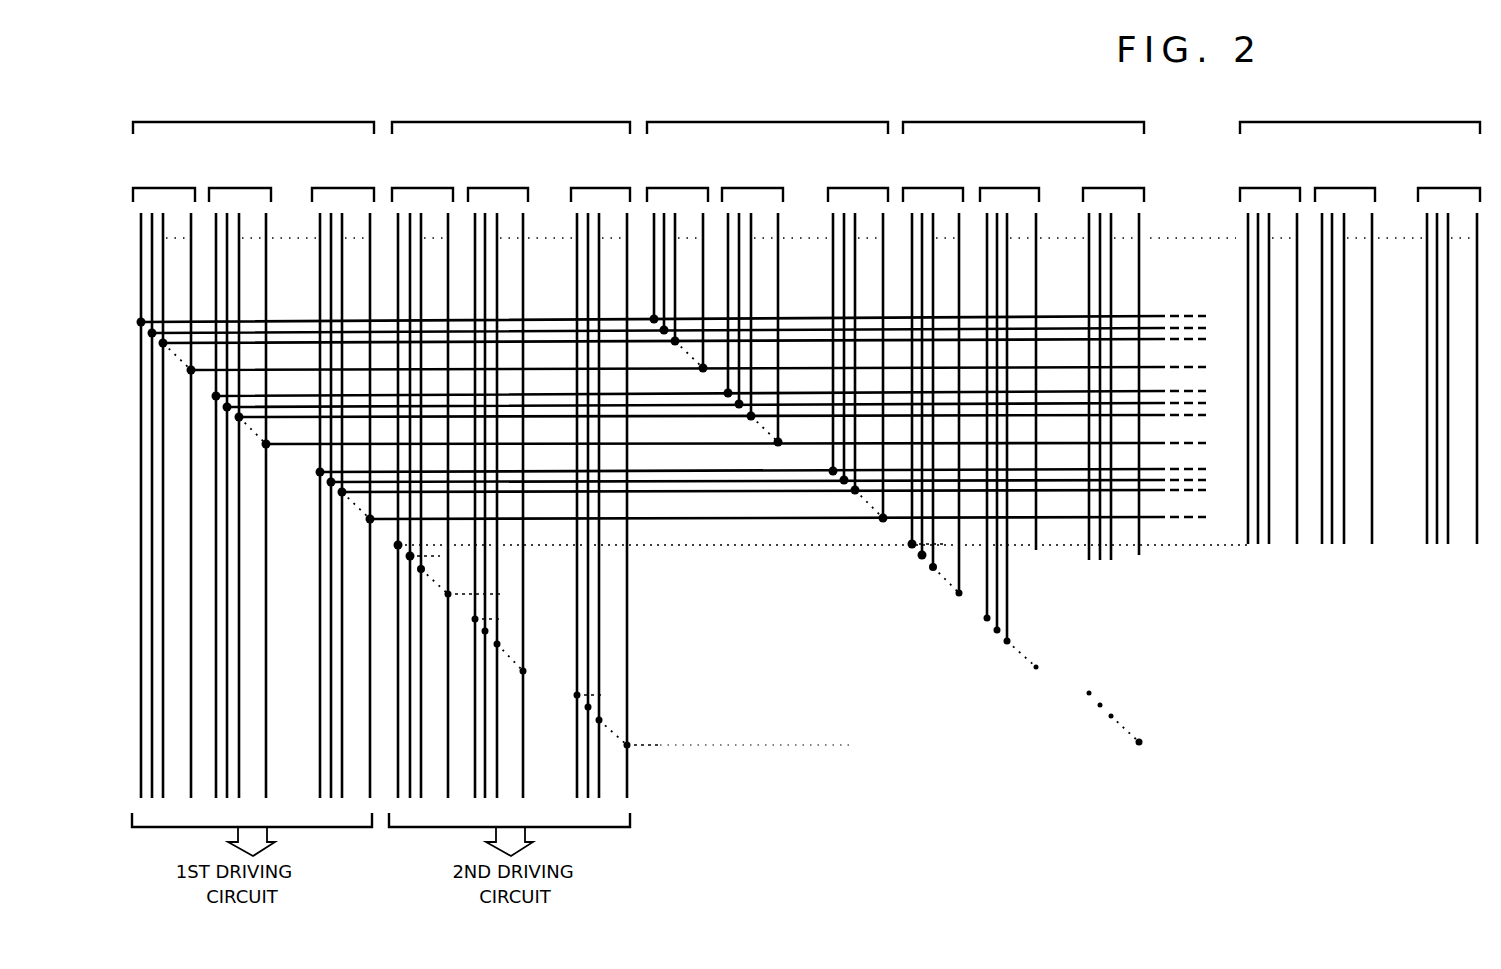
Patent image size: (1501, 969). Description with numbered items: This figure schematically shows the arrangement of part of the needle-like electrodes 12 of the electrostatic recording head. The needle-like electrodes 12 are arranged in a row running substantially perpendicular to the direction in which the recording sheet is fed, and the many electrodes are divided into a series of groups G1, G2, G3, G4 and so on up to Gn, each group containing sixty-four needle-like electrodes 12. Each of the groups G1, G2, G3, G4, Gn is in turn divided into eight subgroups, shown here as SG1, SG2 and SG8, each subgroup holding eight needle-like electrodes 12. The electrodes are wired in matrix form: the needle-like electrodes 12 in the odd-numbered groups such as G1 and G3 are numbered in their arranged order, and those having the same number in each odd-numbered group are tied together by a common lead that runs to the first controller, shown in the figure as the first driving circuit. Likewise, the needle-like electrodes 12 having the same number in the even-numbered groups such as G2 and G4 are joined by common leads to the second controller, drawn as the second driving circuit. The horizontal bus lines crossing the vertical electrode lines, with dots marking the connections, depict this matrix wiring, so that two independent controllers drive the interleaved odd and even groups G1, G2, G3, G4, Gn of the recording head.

The needle-like electrodes 12 is at (141, 252).
The needle-like electrode group G1 is at (253, 444).
The needle-like electrode group G2 is at (511, 444).
The needle-like electrode group G3 is at (767, 304).
The needle-like electrode group G4 is at (1023, 366).
The needle-like electrode group Gn is at (1360, 317).
The subgroup SG1 is at (716, 180).
The subgroup SG2 is at (792, 180).
The subgroup SG8 is at (896, 180).